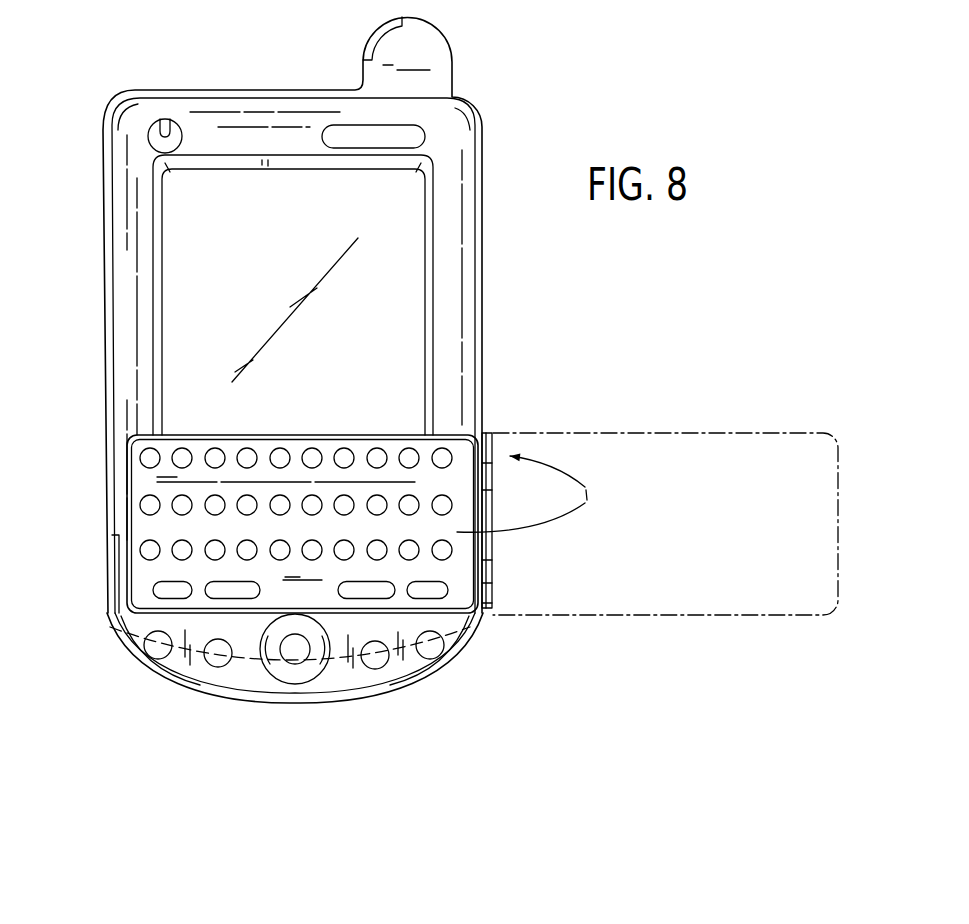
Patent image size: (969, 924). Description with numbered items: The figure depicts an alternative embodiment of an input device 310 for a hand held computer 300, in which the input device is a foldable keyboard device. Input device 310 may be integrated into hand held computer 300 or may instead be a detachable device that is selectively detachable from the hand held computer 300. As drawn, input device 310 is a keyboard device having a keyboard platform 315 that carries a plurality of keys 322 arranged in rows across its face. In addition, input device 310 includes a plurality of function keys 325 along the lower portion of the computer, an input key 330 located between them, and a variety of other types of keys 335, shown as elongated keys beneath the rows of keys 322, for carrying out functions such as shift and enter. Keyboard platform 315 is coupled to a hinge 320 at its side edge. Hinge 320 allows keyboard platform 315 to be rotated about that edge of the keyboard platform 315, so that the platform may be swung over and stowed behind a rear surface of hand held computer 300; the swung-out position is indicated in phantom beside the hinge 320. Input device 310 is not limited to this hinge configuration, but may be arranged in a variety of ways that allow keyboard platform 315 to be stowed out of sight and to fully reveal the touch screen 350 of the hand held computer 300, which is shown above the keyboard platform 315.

The hand held computer 300 is at (514, 110).
The input device 310 is at (292, 762).
The keyboard platform 315 is at (475, 598).
The hinge 320 is at (490, 432).
The keys 322 is at (144, 544).
The function keys 325 is at (218, 666).
The input key 330 is at (295, 663).
The other types of keys 335 is at (152, 590).
The touch screen 350 is at (367, 340).